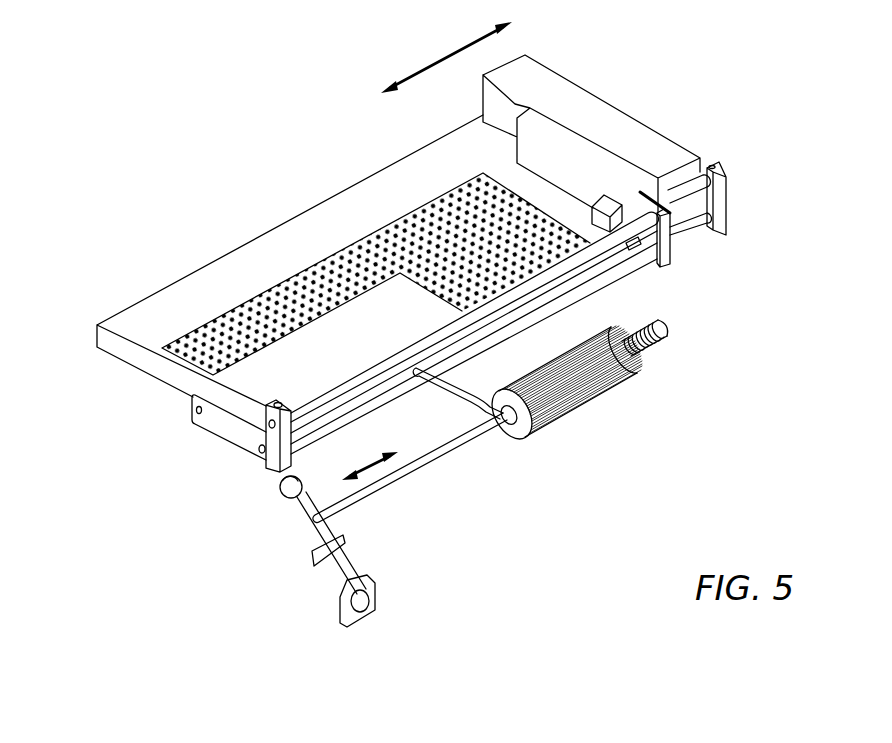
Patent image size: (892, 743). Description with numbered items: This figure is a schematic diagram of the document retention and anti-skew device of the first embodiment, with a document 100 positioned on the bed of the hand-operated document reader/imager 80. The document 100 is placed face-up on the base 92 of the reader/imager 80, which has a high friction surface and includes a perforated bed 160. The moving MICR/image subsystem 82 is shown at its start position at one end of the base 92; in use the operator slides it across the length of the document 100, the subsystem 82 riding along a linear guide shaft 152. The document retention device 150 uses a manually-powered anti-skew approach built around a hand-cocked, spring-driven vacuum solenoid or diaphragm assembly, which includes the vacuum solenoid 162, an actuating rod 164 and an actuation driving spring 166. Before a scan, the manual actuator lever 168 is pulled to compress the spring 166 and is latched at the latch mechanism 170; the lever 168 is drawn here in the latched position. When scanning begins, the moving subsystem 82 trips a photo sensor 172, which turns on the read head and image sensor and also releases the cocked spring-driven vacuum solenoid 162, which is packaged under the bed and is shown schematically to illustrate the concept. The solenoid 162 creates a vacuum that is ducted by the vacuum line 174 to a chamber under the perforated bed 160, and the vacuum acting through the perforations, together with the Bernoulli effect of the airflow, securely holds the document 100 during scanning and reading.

The hand-operated document reader/imager 80 is at (282, 170).
The moving MICR/image subsystem 82 is at (612, 122).
The base 92 is at (427, 205).
The document 100 is at (258, 362).
The document retention device 150 is at (520, 421).
The linear guide shaft 152 is at (353, 382).
The perforated bed 160 is at (283, 300).
The vacuum solenoid 162 is at (613, 392).
The actuating rod 164 is at (470, 443).
The actuation driving spring 166 is at (657, 352).
The manual actuator lever 168 is at (352, 560).
The latch mechanism 170 is at (322, 566).
The photo sensor 172 is at (641, 250).
The vacuum line 174 is at (450, 384).